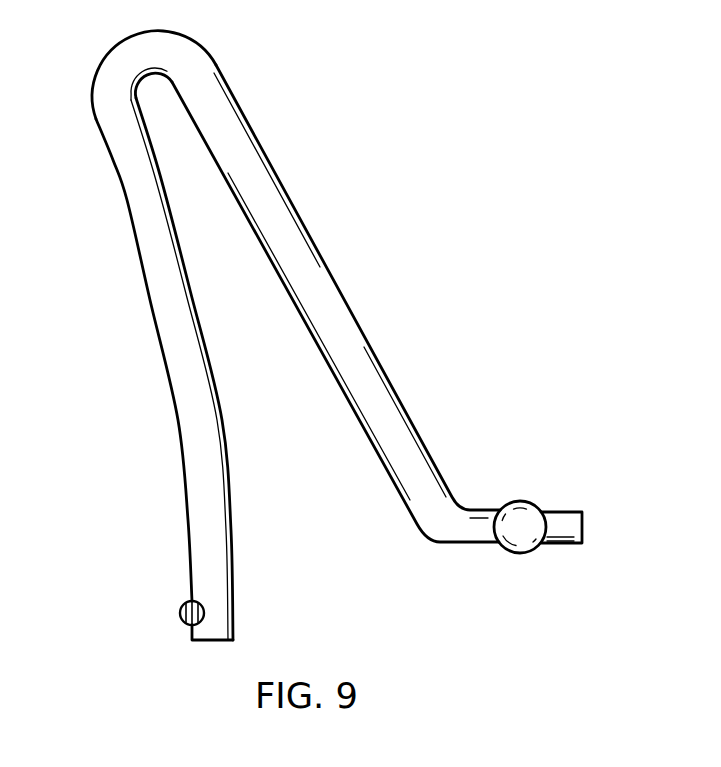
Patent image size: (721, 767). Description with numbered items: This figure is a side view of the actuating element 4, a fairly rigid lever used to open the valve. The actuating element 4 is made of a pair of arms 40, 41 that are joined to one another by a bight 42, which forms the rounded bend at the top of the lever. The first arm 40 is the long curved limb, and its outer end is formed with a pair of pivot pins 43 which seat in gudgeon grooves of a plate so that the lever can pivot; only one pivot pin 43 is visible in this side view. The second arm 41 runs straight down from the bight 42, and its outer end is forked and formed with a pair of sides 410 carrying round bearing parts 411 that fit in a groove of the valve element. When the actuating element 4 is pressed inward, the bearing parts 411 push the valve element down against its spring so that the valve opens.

The actuating element 4 is at (356, 331).
The arm 40 is at (151, 293).
The arm 41 is at (355, 318).
The bight 42 is at (135, 41).
The pivot pin 43 is at (182, 620).
The side 410 is at (583, 532).
The round bearing part 411 is at (528, 502).